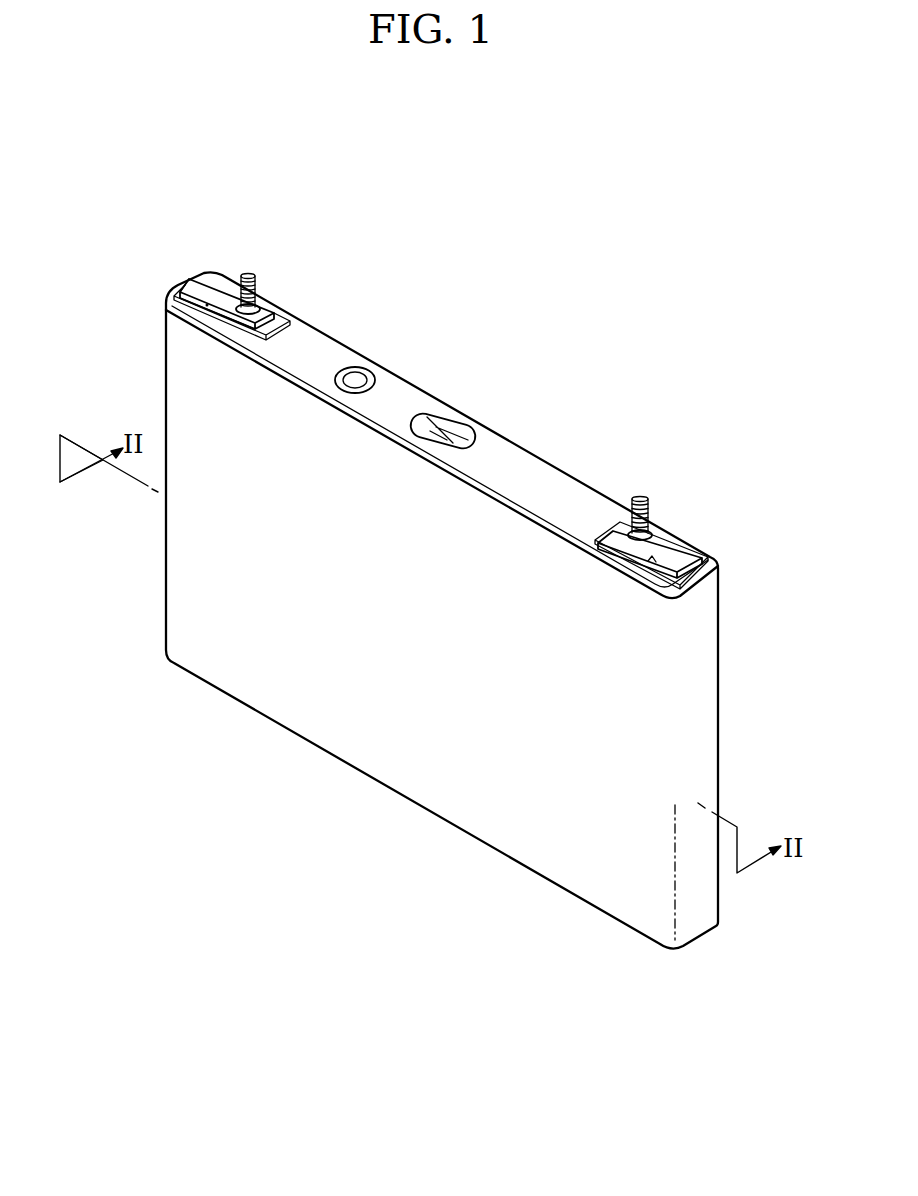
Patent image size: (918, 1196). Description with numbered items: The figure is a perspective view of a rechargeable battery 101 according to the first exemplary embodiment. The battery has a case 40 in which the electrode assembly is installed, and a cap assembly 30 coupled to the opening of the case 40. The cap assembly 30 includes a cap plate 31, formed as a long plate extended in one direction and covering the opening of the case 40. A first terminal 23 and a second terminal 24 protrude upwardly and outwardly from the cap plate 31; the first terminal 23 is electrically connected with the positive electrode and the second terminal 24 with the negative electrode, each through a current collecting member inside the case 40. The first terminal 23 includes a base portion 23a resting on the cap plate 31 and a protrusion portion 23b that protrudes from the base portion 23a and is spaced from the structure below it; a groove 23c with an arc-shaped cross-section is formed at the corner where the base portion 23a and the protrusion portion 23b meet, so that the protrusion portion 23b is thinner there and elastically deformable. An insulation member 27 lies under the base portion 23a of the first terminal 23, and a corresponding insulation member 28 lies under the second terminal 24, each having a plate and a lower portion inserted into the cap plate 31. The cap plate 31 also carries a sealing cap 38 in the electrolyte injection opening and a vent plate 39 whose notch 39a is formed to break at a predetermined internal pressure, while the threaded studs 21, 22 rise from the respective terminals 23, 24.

The rechargeable battery 101 is at (495, 237).
The first terminal 21 is at (250, 274).
The second terminal 22 is at (641, 500).
The first terminal 23 is at (212, 281).
The base portion 23a is at (190, 297).
The protrusion portion 23b is at (213, 313).
The groove 23c is at (207, 304).
The second terminal 24 is at (670, 546).
The insulation member 27 is at (282, 318).
The insulation member 28 is at (706, 566).
The cap assembly 30 is at (577, 478).
The cap plate 31 is at (535, 468).
The electrolyte injection opening sealing cap 38 is at (359, 378).
The vent plate 39 is at (462, 428).
The notch 39a is at (437, 428).
The case 40 is at (402, 762).